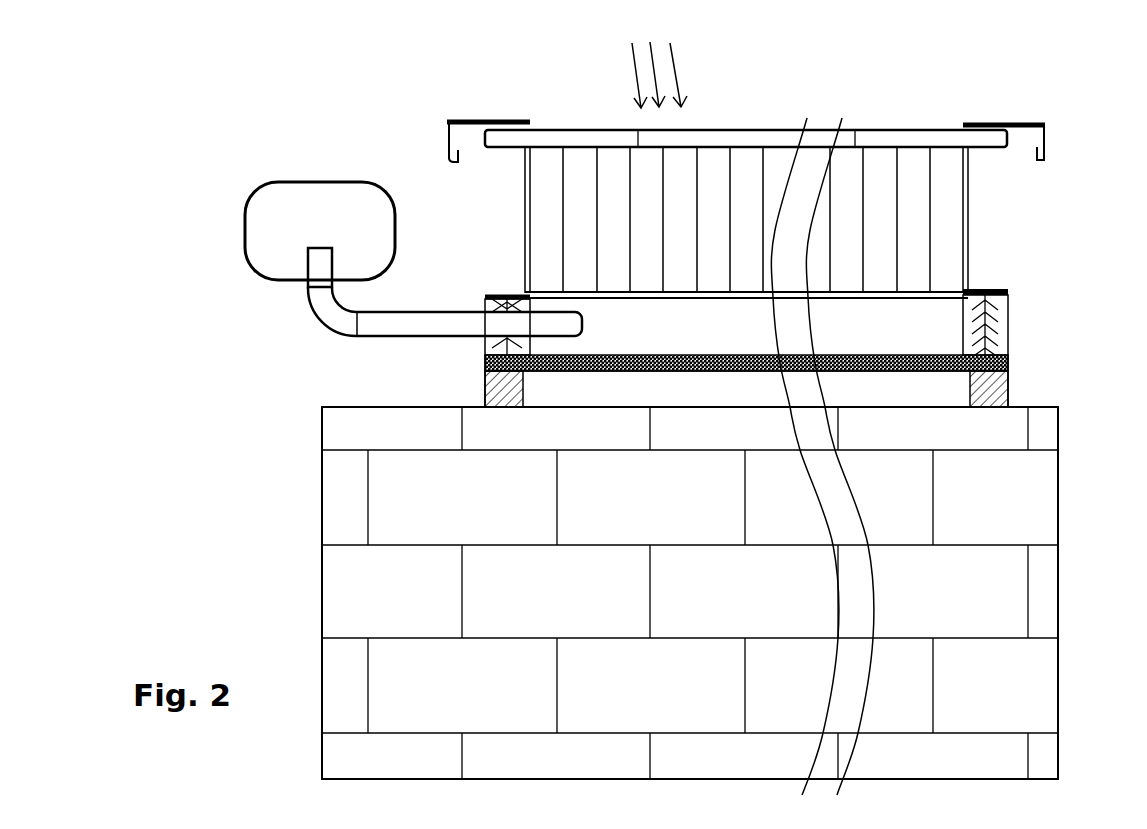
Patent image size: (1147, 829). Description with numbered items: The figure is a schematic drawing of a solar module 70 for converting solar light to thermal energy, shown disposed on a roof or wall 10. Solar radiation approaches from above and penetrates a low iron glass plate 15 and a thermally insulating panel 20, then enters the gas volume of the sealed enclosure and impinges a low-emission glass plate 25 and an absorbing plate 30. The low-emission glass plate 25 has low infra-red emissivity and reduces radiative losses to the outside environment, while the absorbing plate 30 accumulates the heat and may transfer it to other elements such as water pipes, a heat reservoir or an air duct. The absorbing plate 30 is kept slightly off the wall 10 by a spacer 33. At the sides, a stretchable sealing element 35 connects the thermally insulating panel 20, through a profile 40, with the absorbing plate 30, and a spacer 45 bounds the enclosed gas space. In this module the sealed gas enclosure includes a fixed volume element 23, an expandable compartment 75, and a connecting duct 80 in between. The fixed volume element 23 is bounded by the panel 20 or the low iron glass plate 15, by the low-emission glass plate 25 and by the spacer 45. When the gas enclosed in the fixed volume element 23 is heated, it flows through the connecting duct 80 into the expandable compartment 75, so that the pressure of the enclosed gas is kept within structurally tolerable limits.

The wall 10 is at (353, 427).
The low iron glass plate 15 is at (720, 130).
The thermally insulating panel 20 is at (598, 180).
The fixed volume element 23 is at (898, 328).
The low-emission glass plate 25 is at (882, 357).
The absorbing plate 30 is at (600, 372).
The spacer 33 is at (473, 391).
The stretchable sealing element 35 is at (1000, 320).
The profile 40 is at (450, 121).
The spacer 45 is at (973, 287).
The solar module 70 is at (330, 145).
The expandable compartment 75 is at (250, 197).
The connecting duct 80 is at (323, 322).